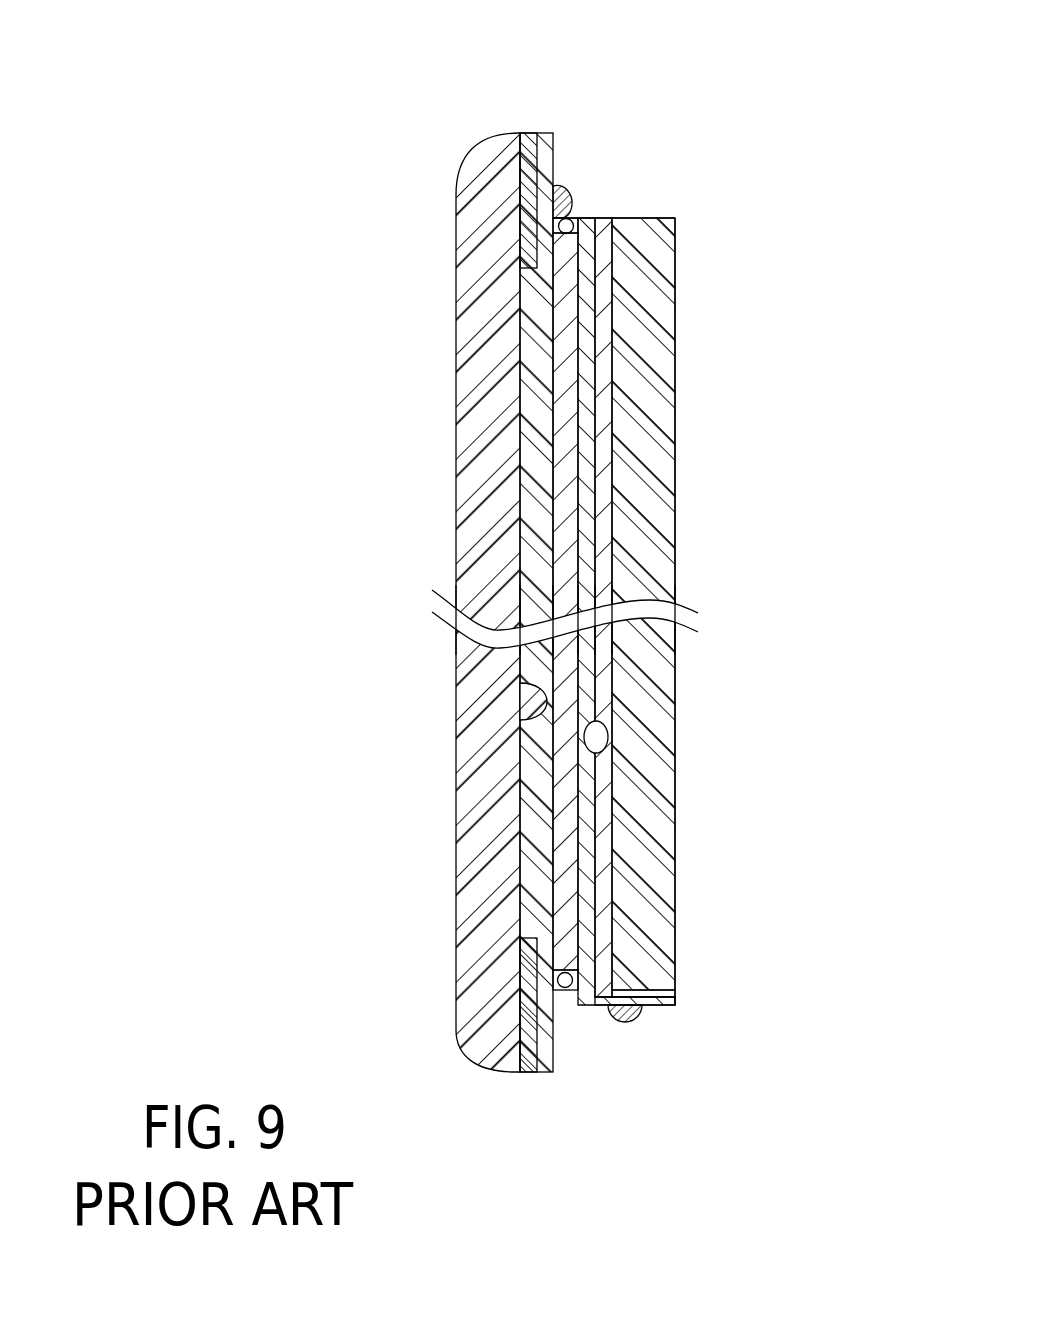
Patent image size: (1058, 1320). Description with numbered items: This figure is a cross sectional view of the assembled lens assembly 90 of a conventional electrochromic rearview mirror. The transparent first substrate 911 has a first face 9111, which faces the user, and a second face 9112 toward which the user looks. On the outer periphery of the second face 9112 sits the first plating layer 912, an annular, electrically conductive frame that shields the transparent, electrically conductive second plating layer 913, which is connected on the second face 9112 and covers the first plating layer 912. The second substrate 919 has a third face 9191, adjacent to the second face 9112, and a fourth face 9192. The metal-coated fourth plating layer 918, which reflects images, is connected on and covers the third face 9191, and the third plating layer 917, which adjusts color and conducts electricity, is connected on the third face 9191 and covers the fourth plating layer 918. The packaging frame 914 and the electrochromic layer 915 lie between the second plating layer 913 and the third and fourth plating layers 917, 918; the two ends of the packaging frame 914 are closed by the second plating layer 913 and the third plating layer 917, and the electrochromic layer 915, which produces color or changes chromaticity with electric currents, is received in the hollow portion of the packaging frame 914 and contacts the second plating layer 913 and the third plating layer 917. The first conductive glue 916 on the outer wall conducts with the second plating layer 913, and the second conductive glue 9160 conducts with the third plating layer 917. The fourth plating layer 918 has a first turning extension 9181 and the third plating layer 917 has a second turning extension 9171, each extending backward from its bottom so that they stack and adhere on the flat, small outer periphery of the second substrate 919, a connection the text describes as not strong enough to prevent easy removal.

The lens assembly 90 is at (560, 575).
The first substrate 911 is at (468, 327).
The first face 9111 is at (456, 742).
The second face 9112 is at (545, 688).
The first plating layer 912 is at (520, 218).
The second plating layer 913 is at (527, 372).
The packaging frame 914 is at (605, 575).
The electrochromic layer 915 is at (562, 452).
The first conductive glue 916 is at (567, 186).
The second conductive glue 9160 is at (627, 1022).
The third plating layer 917 is at (584, 468).
The second turning extension 9171 is at (650, 1005).
The fourth plating layer 918 is at (605, 388).
The first turning extension 9181 is at (661, 990).
The second substrate 919 is at (645, 312).
The third face 9191 is at (586, 720).
The fourth face 9192 is at (677, 795).